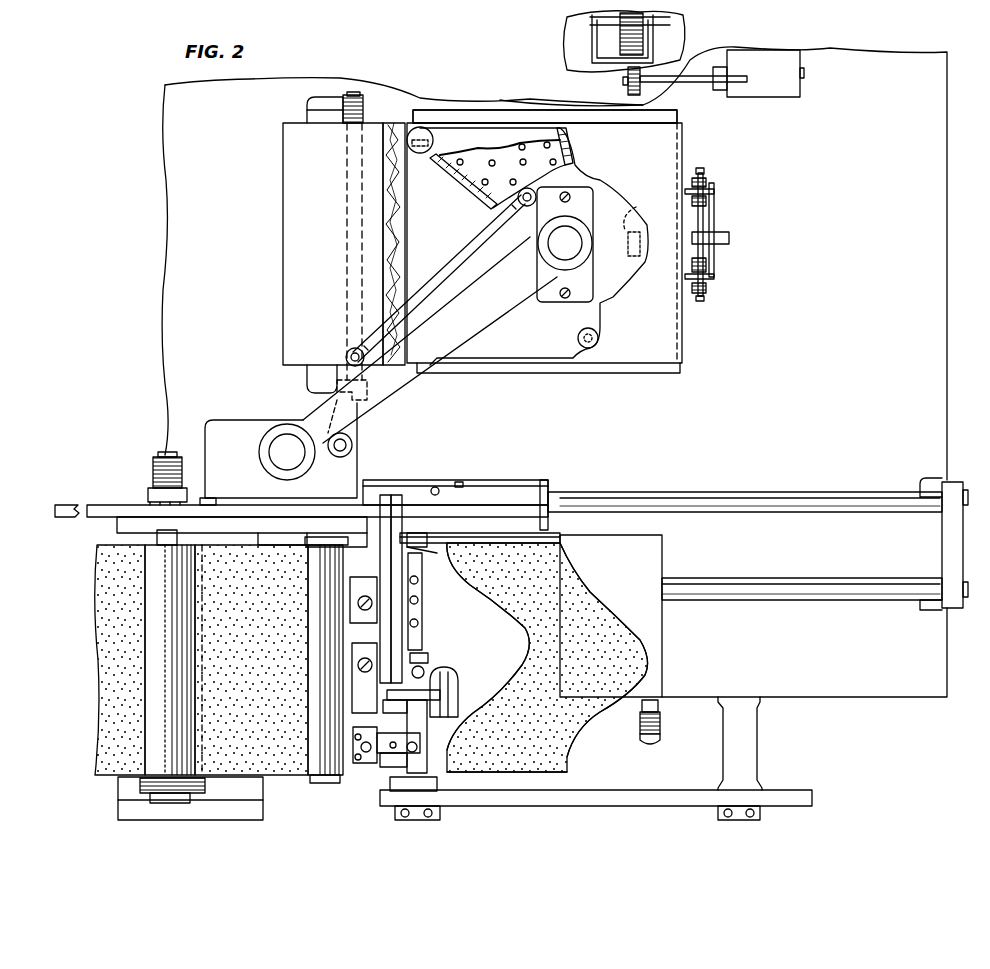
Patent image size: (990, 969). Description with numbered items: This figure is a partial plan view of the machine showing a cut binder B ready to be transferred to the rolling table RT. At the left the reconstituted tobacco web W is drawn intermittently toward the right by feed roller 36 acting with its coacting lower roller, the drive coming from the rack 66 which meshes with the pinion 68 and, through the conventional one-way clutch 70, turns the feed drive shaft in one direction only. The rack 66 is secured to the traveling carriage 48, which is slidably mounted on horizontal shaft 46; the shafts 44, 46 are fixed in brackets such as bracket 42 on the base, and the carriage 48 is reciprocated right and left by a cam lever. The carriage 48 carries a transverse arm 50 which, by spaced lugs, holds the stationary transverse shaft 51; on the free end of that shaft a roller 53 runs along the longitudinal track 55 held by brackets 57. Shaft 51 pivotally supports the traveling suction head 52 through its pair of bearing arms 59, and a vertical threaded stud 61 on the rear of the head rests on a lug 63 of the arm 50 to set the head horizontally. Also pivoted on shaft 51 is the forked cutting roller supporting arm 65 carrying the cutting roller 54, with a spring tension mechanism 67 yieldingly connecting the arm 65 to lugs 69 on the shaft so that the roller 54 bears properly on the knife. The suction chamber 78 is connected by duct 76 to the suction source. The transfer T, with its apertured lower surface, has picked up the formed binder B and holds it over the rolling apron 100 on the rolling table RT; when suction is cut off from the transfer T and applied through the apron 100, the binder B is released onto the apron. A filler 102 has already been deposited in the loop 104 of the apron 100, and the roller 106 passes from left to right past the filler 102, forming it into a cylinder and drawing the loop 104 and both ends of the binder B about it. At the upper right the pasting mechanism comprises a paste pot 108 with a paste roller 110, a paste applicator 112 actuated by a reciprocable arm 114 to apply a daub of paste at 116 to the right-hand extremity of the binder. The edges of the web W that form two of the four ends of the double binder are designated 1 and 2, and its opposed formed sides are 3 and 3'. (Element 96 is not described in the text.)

The edge of the web 1 is at (555, 541).
The edge of the web 2 is at (555, 773).
The formed side of the double binder 3 is at (488, 646).
The formed side of the double binder 3' is at (604, 650).
The feed roller 36 is at (152, 557).
The bracket 42 is at (942, 541).
The horizontal shaft 44 is at (883, 580).
The horizontal shaft 46 is at (822, 494).
The traveling carriage 48 is at (560, 487).
The transverse arm 50 is at (383, 530).
The transverse shaft 51 is at (385, 692).
The traveling suction head 52 is at (437, 556).
The roller 53 is at (428, 790).
The cutting roller 54 is at (318, 768).
The longitudinal track 55 is at (633, 800).
The bracket 57 is at (752, 746).
The bearing arm 59 is at (423, 556).
The threaded stud 61 is at (425, 670).
The lug 63 is at (425, 654).
The cutting roller supporting arm 65 is at (362, 770).
The rack 66 is at (100, 505).
The spring tension mechanism 67 is at (365, 787).
The pinion 68 is at (196, 500).
The lug 69 is at (388, 760).
The one-way clutch 70 is at (150, 470).
The duct 76 is at (661, 731).
The suction chamber 78 is at (664, 634).
The loop 96 is at (457, 698).
The rolling apron 100 is at (683, 352).
The filler 102 is at (400, 226).
The loop 104 is at (397, 123).
The roller 106 is at (358, 123).
The paste pot 108 is at (600, 35).
The paste roller 110 is at (643, 33).
The paste applicator 112 is at (628, 88).
The reciprocable arm 114 is at (718, 92).
The paste daub 116 is at (625, 215).
The binder B is at (586, 596).
The transfer T is at (616, 329).
The rolling table RT is at (553, 393).
The tobacco web W is at (97, 612).